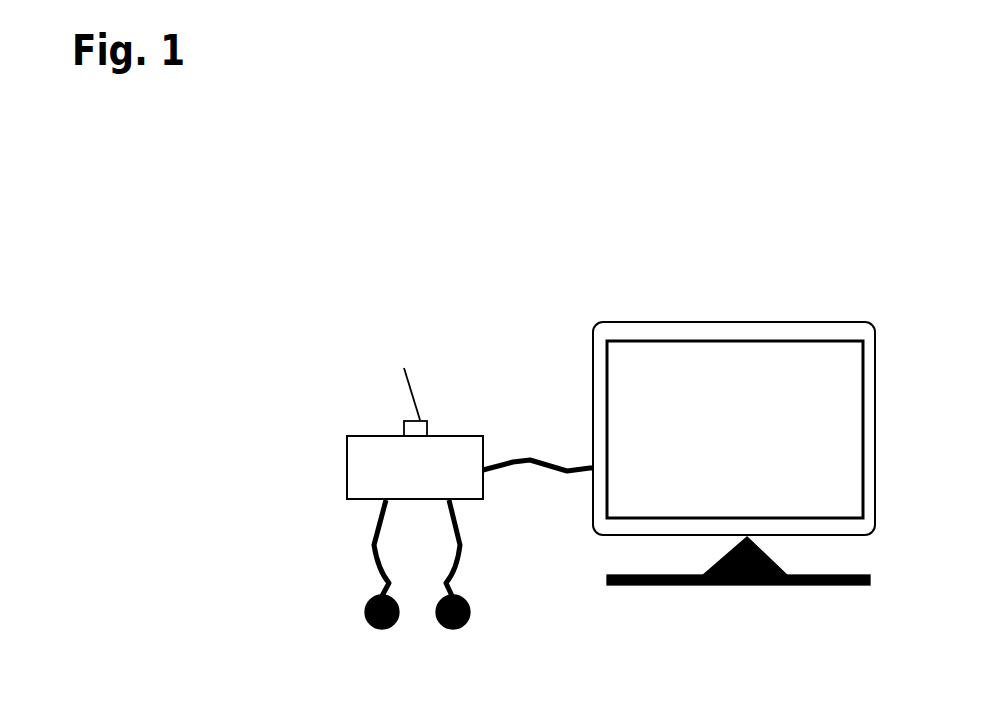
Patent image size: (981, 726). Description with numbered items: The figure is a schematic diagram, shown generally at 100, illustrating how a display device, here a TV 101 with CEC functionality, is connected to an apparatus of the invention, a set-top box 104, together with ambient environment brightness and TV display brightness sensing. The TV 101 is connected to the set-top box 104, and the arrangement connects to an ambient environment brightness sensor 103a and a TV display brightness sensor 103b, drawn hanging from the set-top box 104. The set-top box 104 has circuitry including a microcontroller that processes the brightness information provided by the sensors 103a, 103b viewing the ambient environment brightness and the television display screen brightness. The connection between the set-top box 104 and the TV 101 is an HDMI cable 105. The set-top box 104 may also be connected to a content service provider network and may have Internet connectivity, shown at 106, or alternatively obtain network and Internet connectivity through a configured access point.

The schematic diagram of TV connected to set-top box with brightness sensing 100 is at (596, 265).
The TV 101 is at (768, 355).
The ambient environment brightness sensor 103a is at (367, 610).
The TV display brightness sensor 103b is at (470, 610).
The set-top box 104 is at (463, 445).
The HDMI cable 105 is at (548, 460).
The Internet connectivity 106 is at (404, 429).